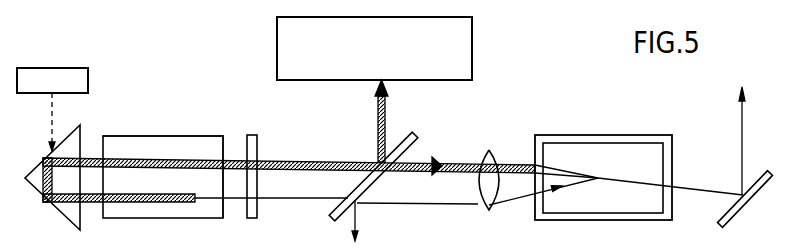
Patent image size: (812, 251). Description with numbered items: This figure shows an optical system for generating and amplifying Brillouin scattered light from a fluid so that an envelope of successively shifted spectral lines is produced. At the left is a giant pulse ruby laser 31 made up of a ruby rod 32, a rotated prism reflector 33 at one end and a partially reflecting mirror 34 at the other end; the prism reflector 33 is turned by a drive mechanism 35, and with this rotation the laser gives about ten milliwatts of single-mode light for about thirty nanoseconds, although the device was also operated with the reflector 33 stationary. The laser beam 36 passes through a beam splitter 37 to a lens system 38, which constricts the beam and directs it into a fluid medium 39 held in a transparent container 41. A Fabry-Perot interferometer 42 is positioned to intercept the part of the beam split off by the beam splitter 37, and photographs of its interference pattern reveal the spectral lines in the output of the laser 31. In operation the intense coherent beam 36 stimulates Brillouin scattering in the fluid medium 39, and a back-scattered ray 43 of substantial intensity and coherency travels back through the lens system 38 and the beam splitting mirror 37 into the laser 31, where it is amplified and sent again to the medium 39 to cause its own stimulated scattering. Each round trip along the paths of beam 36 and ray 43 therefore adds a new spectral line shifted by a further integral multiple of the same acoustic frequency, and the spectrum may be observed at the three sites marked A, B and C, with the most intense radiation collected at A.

The giant pulse ruby laser 31 is at (152, 130).
The ruby rod 32 is at (190, 135).
The rotated prism reflector 33 is at (70, 127).
The partially reflecting mirror 34 is at (252, 135).
The drive mechanism 35 is at (58, 68).
The laser beam 36 is at (310, 160).
The beam splitter 37 is at (413, 136).
The lens system 38 is at (496, 155).
The fluid medium 39 is at (628, 152).
The transparent container 41 is at (577, 135).
The Fabry-Perot interferometer 42 is at (472, 40).
The back-scattered ray 43 is at (427, 203).